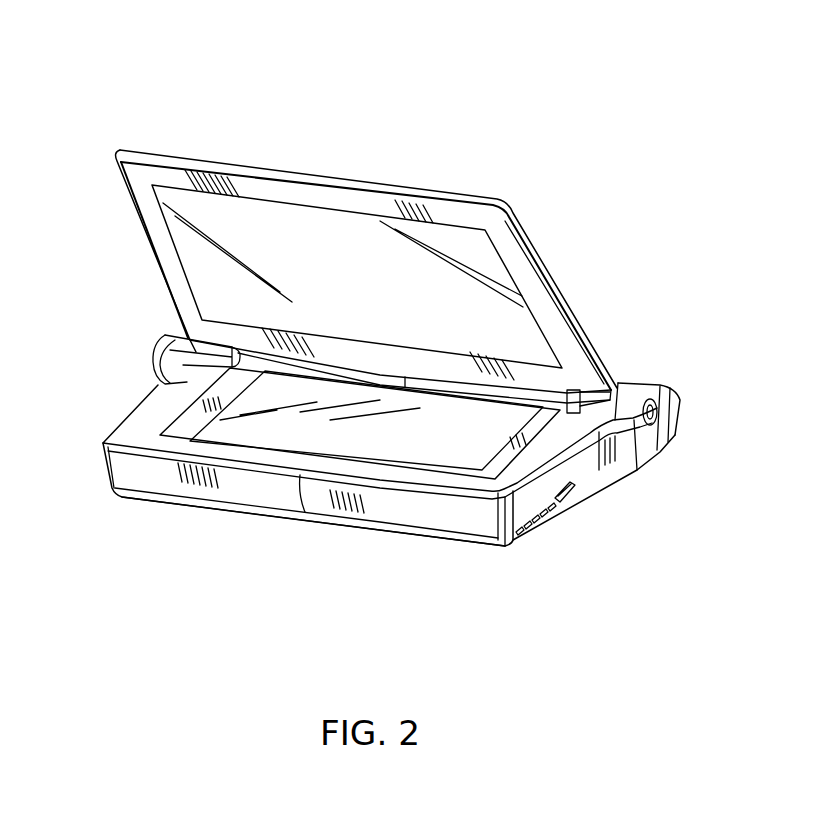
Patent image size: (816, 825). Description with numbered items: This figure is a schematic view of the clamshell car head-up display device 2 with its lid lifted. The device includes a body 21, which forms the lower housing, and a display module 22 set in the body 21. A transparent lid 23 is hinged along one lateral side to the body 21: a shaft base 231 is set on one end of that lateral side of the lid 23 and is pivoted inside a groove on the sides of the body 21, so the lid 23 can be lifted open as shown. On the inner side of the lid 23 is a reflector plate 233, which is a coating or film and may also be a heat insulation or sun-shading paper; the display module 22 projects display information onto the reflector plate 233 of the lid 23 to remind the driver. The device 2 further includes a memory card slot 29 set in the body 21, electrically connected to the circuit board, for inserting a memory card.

The clamshell car head-up display device 2 is at (342, 132).
The body 21 is at (423, 510).
The display module 22 is at (303, 429).
The lid 23 is at (565, 296).
The shaft base 231 is at (207, 360).
The reflector plate 233 is at (177, 250).
The memory card slot 29 is at (567, 495).